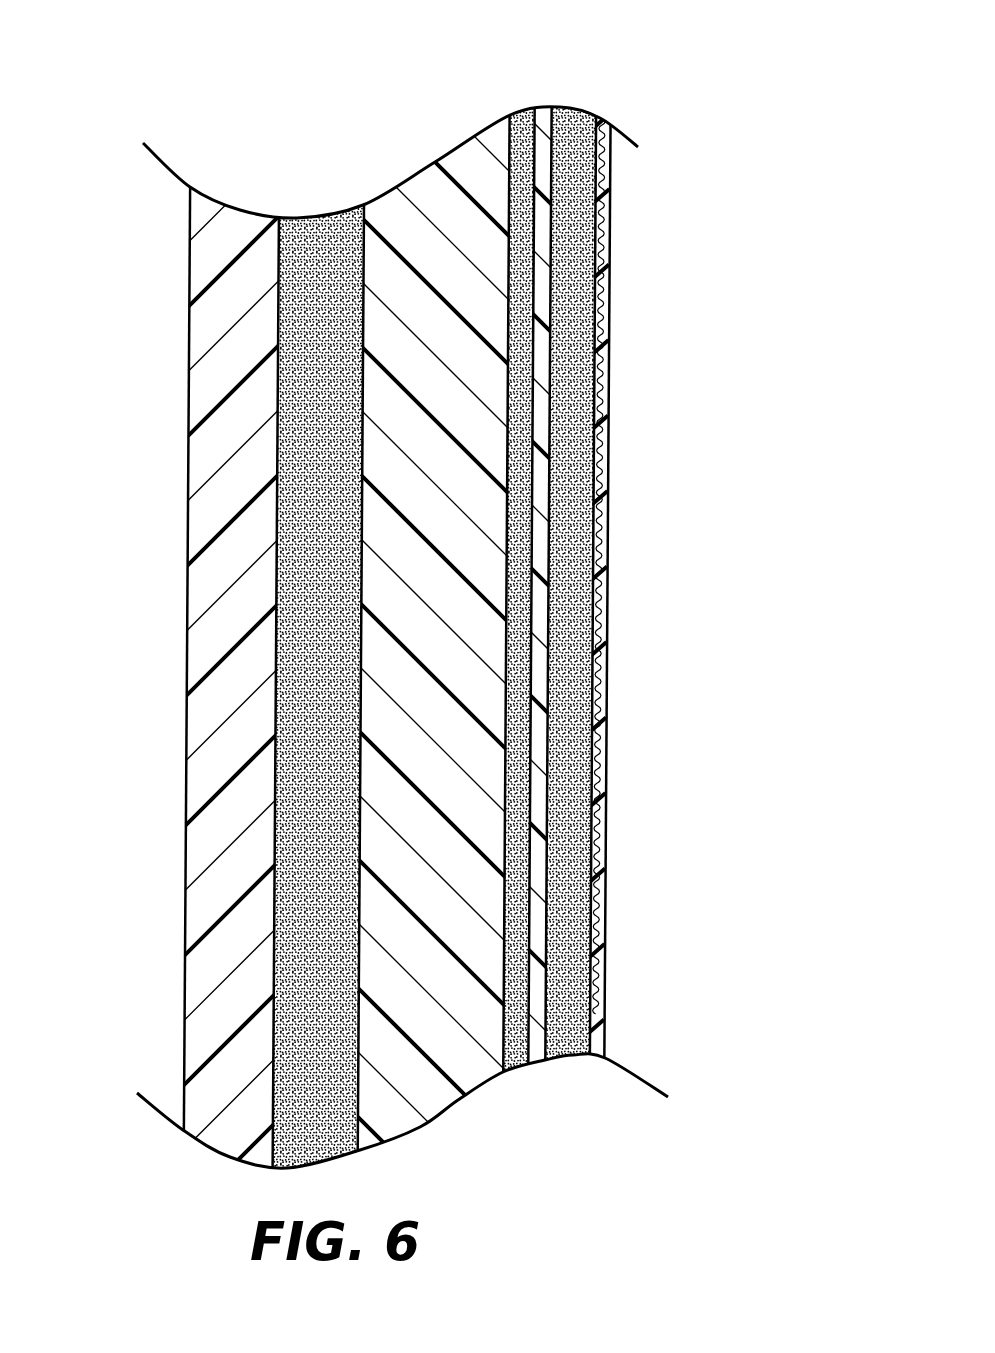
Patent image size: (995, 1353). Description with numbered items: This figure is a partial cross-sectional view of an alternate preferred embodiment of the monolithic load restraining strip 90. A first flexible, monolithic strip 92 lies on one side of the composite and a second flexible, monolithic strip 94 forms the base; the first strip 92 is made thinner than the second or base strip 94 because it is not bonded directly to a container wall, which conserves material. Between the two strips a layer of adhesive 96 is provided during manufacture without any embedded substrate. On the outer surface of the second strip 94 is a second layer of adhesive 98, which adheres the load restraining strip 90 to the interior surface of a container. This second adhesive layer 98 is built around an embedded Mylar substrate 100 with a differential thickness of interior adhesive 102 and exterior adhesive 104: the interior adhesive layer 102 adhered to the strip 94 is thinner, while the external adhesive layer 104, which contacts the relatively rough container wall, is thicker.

The monolithic load restraining strip 90 is at (648, 322).
The first flexible, monolithic strip 92 is at (174, 468).
The second flexible, monolithic strip 94 is at (451, 1116).
The layer of adhesive 96 is at (323, 243).
The second layer of adhesive 98 is at (620, 528).
The embedded Mylar substrate 100 is at (543, 120).
The interior adhesive 102 is at (524, 125).
The exterior adhesive 104 is at (573, 1058).